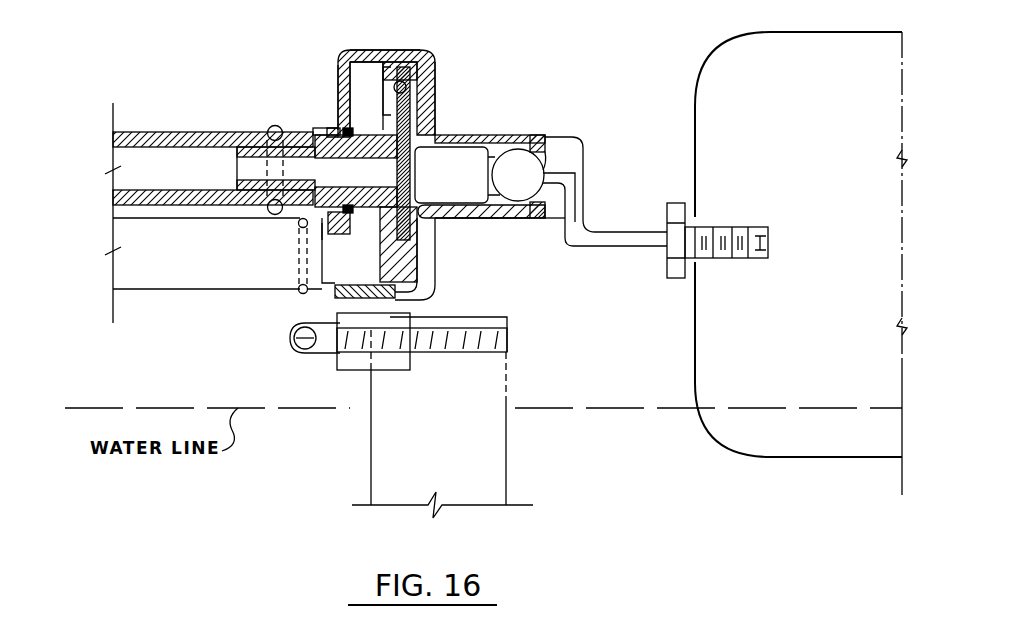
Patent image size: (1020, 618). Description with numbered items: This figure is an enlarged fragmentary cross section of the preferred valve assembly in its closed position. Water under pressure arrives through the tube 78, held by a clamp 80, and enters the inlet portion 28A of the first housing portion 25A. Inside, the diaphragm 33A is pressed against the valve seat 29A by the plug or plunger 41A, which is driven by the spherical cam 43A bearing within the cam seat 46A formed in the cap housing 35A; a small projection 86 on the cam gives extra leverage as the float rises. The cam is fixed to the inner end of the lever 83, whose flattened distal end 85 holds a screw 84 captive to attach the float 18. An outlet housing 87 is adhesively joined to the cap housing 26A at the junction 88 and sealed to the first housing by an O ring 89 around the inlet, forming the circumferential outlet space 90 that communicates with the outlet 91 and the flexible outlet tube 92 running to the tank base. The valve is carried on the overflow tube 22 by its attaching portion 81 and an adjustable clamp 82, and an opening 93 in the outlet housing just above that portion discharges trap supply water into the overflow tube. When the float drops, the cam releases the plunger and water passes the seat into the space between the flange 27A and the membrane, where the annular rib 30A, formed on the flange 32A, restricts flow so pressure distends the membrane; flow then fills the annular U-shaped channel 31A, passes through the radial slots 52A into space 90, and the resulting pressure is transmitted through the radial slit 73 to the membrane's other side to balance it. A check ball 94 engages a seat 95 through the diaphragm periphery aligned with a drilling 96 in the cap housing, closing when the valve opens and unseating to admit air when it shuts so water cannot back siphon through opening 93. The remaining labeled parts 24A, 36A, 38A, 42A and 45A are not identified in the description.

The float 18 is at (695, 378).
The overflow tube 22 is at (507, 430).
The valve body upper flange 24A is at (445, 128).
The first housing portion 25A is at (326, 126).
The cap housing 26A is at (472, 221).
The flange 27A is at (343, 72).
The inlet portion 28A is at (250, 197).
The valve seat 29A is at (393, 163).
The annular rib 30A is at (373, 218).
The annular U-shaped channel 31A is at (345, 125).
The flange 32A is at (380, 67).
The diaphragm 33A is at (418, 165).
The cap housing 35A is at (493, 134).
The lower body wall 36A is at (437, 268).
The outlet fitting wall 38A is at (585, 160).
The plug or plunger 41A is at (543, 168).
The lower flange edge 42A is at (478, 222).
The spherical cam 43A is at (550, 158).
The outlet passage 45A is at (578, 178).
The cam seat 46A is at (548, 222).
The radial slots 52A is at (381, 271).
The radial slit 73 is at (424, 300).
The tube or conduit 78 is at (182, 131).
The clamp 80 is at (269, 127).
The attaching portion 81 is at (352, 363).
The adjustable clamp 82 is at (512, 340).
The lever 83 is at (642, 232).
The screw 84 is at (674, 280).
The flattened distal end 85 is at (762, 240).
The small projection 86 is at (495, 166).
The outlet housing 87 is at (342, 60).
The junction 88 is at (408, 52).
The O ring 89 is at (303, 228).
The circumferential outlet space 90 is at (368, 65).
The outlet 91 is at (322, 294).
The outlet conduit or tube 92 is at (172, 290).
The opening 93 is at (378, 303).
The check ball 94 is at (383, 106).
The seat 95 is at (437, 85).
The drilling 96 is at (427, 90).